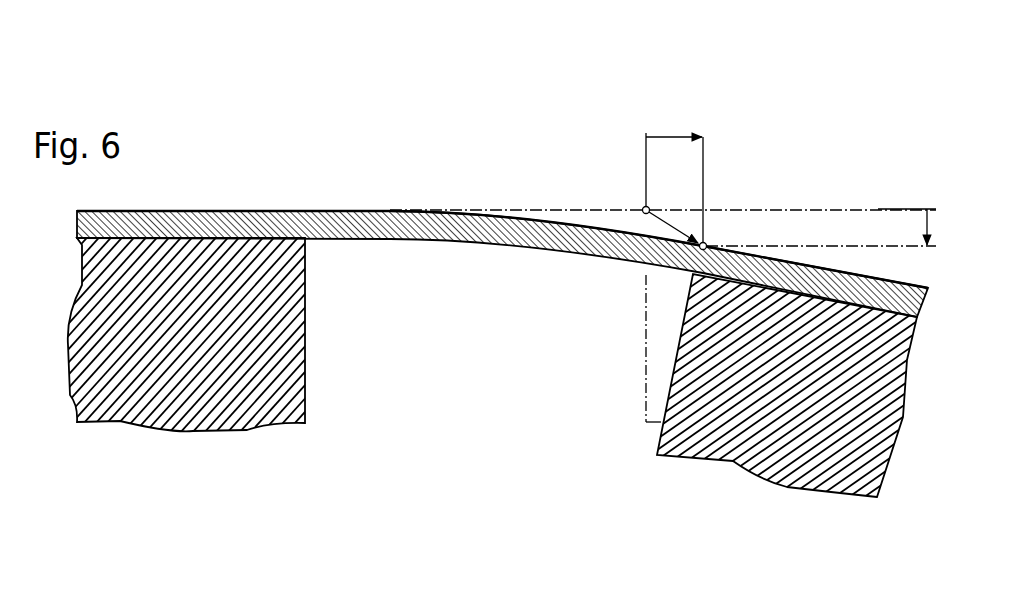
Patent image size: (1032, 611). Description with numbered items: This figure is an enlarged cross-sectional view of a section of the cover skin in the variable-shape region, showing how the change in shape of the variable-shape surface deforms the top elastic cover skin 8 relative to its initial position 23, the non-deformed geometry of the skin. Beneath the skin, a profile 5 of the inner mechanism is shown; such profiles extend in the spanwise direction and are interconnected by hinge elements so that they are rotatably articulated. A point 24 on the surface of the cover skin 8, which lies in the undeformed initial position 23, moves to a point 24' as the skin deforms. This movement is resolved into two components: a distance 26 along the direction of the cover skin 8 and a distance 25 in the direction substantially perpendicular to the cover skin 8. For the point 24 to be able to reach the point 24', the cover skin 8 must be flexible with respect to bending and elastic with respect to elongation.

The top elastic cover skin 8 is at (405, 221).
The profile 5 is at (713, 423).
The initial position 23 is at (565, 203).
The point on the surface of the cover skin 24 is at (621, 236).
The point on the surface of the cover skin 24' is at (744, 193).
The vertical deformation of the point 25 is at (917, 191).
The distance in the direction along the cover skin 26 is at (683, 133).